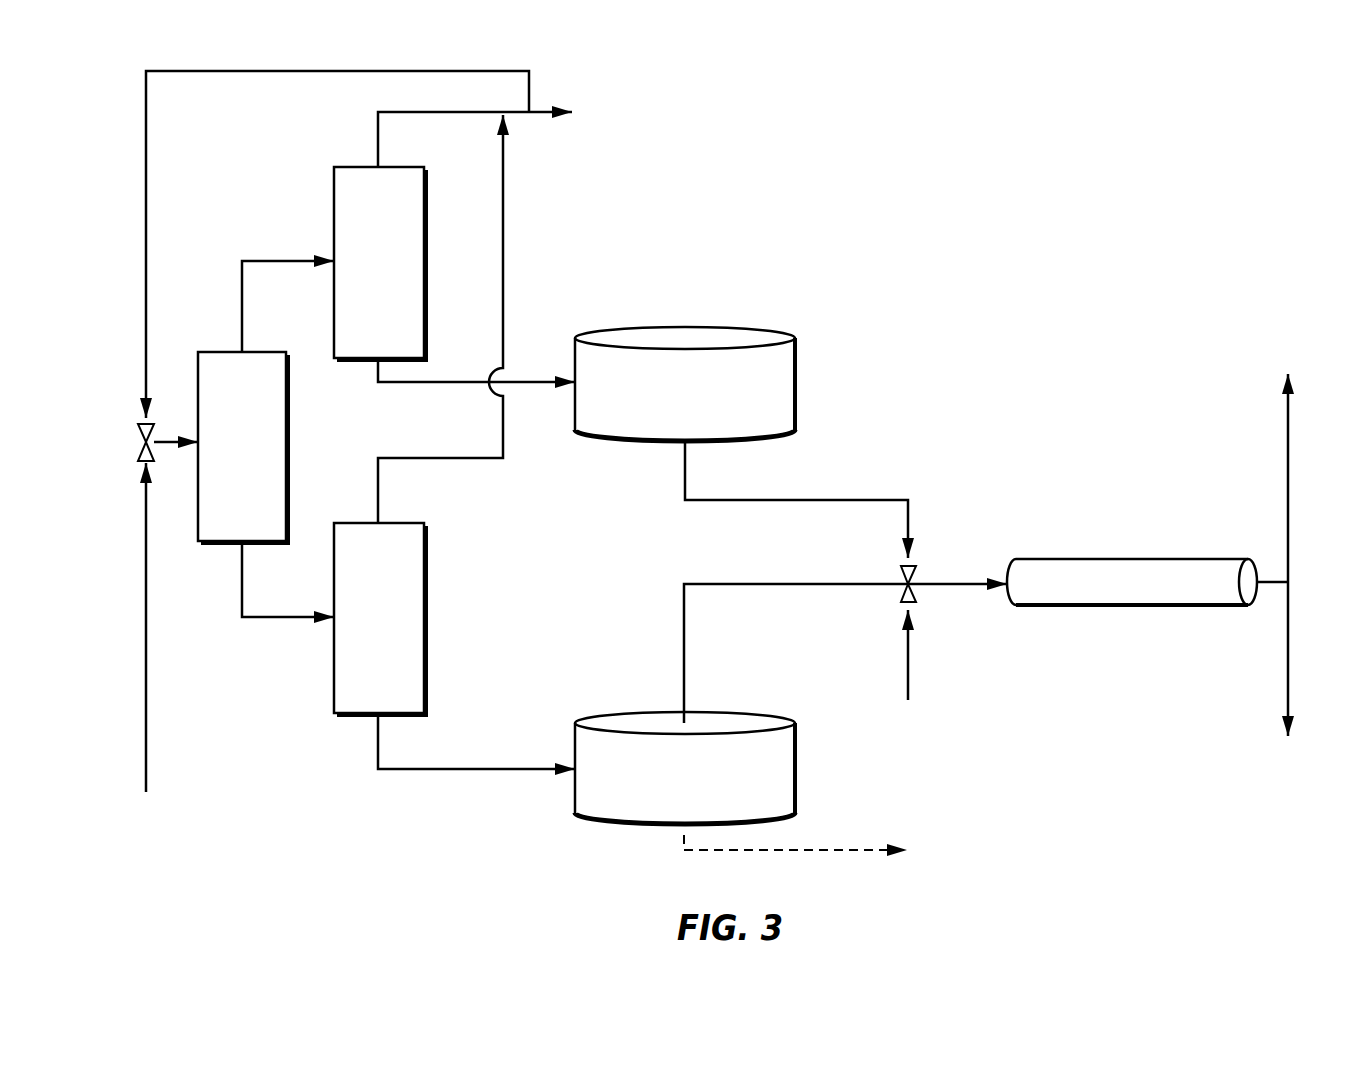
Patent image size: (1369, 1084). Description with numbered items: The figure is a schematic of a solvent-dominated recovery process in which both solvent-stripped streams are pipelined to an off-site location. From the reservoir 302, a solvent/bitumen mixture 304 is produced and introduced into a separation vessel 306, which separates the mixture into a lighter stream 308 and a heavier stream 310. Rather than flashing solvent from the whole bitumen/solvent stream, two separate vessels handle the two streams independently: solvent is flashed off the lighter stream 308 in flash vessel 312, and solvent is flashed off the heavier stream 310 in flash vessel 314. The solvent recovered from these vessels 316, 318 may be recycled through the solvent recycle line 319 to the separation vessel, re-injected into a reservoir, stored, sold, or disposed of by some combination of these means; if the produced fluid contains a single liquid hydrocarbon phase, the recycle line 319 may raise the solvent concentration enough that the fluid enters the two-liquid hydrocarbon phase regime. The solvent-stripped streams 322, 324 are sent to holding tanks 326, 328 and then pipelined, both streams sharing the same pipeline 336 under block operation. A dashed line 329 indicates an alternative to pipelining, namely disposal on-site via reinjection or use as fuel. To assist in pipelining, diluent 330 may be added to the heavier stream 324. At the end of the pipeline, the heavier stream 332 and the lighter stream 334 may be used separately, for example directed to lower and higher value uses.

The reservoir 302 is at (192, 817).
The solvent/bitumen mixture 304 is at (146, 623).
The separation vessel 306 is at (216, 352).
The lighter stream 308 is at (272, 261).
The heavier stream 310 is at (277, 617).
The flash vessel 312 is at (352, 167).
The flash vessel 314 is at (353, 523).
The solvent from flash vessel 316 is at (457, 112).
The solvent from flash vessel 318 is at (436, 458).
The solvent recycle line 319 is at (234, 72).
The solvent-stripped stream 322 is at (437, 382).
The solvent-stripped stream 324 is at (477, 769).
The holding tank 326 is at (758, 332).
The holding tank 328 is at (758, 716).
The dashed line 329 is at (820, 850).
The diluent 330 is at (908, 661).
The heavier stream 332 is at (1288, 665).
The lighter stream 334 is at (1288, 475).
The pipeline 336 is at (1134, 559).